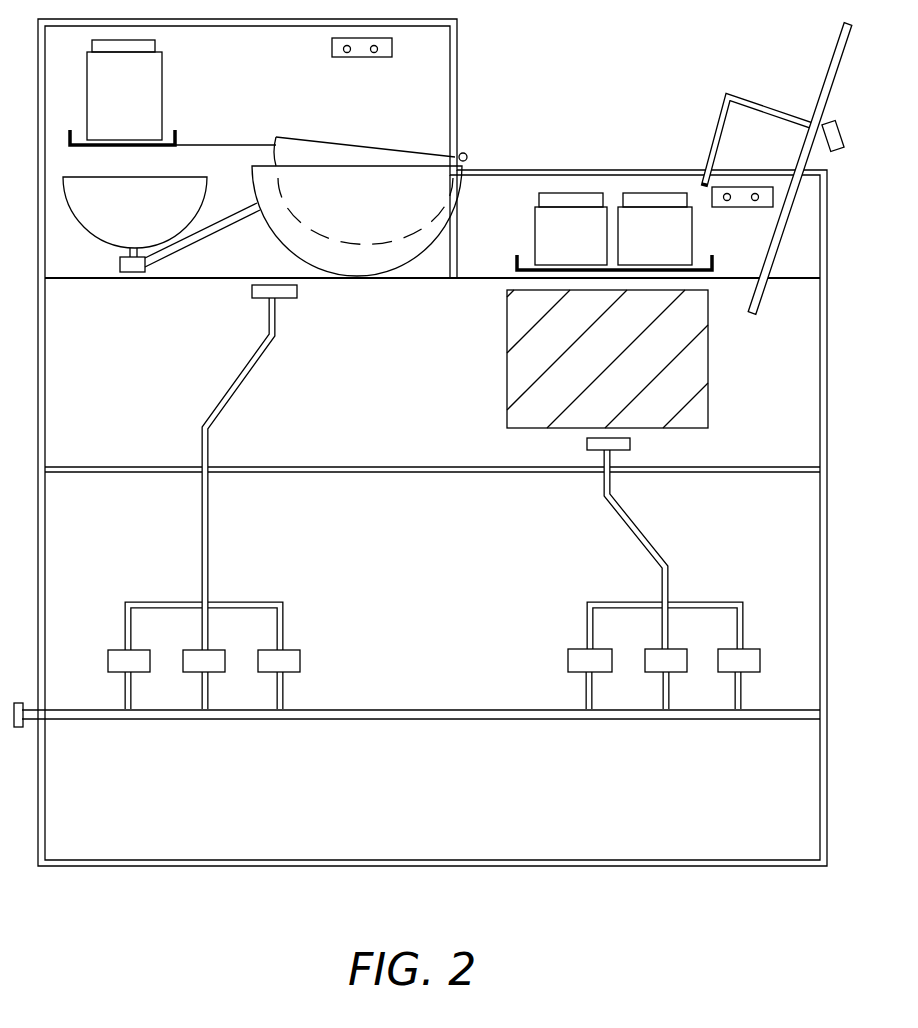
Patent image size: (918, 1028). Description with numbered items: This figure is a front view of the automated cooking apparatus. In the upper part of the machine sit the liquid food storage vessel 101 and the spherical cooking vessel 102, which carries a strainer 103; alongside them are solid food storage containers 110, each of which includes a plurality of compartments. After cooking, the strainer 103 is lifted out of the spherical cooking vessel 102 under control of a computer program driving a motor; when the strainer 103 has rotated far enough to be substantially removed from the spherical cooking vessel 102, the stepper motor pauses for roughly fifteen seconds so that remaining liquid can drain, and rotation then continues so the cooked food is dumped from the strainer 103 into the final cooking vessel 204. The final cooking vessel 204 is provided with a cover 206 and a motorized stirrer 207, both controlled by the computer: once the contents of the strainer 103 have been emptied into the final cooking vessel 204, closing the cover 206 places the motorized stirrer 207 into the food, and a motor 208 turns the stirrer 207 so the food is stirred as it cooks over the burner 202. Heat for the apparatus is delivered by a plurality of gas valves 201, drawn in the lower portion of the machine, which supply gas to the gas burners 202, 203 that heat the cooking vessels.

The liquid food storage vessel 101 is at (161, 224).
The spherical cooking vessel 102 is at (357, 221).
The strainer 103 is at (303, 138).
The solid food storage container 110 is at (614, 231).
The gas valves 201 is at (434, 531).
The gas burner 202 is at (632, 448).
The gas burner 203 is at (288, 298).
The final cooking vessel 204 is at (607, 359).
The cover 206 is at (827, 77).
The motorized stirrer 207 is at (720, 110).
The motor 208 is at (833, 153).